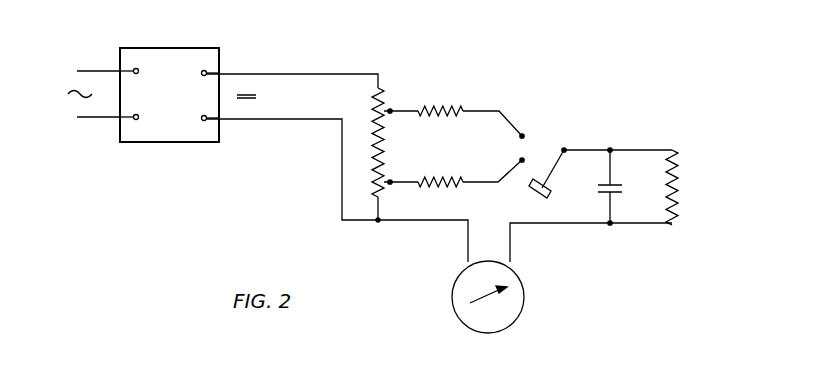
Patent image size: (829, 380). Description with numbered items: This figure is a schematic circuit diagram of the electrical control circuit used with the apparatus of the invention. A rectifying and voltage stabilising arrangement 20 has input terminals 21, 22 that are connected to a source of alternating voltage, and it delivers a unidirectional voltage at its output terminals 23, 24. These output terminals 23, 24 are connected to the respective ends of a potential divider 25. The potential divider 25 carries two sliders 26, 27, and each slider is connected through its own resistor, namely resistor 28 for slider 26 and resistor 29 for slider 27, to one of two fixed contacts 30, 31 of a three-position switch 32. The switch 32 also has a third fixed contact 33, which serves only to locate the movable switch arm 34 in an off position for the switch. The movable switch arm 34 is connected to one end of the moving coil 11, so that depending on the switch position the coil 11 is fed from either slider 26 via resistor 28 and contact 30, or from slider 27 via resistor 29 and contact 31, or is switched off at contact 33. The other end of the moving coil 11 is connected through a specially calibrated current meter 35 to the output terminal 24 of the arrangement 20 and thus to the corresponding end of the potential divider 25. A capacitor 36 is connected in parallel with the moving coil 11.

The moving coil 11 is at (666, 186).
The rectifying and voltage stabilising arrangement 20 is at (170, 50).
The input terminal 21 is at (137, 67).
The input terminal 22 is at (137, 121).
The unidirectional voltage output terminal 23 is at (207, 70).
The unidirectional voltage output terminal 24 is at (204, 122).
The potential divider 25 is at (388, 155).
The slider 26 is at (390, 109).
The slider 27 is at (390, 185).
The resistor 28 is at (442, 110).
The resistor 29 is at (452, 188).
The fixed contact 30 is at (523, 133).
The fixed contact 31 is at (521, 165).
The three-position switch 32 is at (536, 143).
The third fixed contact 33 is at (550, 192).
The movable switch arm 34 is at (560, 149).
The current meter 35 is at (522, 283).
The capacitor 36 is at (617, 184).